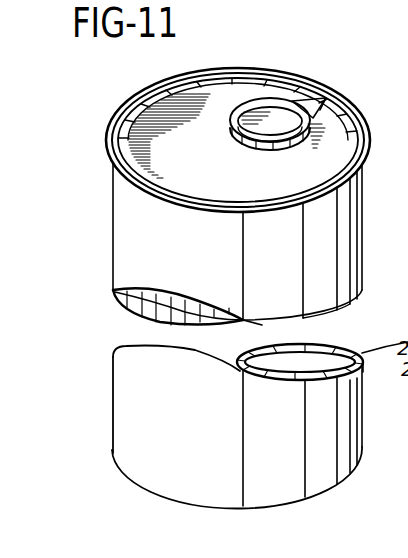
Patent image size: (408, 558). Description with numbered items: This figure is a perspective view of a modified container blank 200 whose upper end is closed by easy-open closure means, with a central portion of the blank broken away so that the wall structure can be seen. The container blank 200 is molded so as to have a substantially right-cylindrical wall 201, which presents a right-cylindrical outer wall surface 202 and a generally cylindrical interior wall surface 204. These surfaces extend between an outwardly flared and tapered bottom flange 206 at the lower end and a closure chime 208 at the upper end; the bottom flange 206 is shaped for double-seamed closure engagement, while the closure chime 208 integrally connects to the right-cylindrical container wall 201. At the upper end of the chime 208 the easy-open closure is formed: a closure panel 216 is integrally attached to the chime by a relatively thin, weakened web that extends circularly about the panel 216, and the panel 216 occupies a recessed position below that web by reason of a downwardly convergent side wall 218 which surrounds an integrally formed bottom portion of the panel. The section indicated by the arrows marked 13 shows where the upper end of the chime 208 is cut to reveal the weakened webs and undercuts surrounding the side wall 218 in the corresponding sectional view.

The section line for FIG. 13 is at (350, 90).
The container blank 200 is at (114, 317).
The right-cylindrical wall 201 is at (172, 119).
The right-cylindrical outer wall surface 202 is at (322, 388).
The generally cylindrical interior wall surface 204 is at (182, 312).
The outwardly flared and tapered bottom flange 206 is at (113, 455).
The closure chime 208 is at (167, 200).
The closure panel 216 is at (203, 183).
The downwardly convergent side wall 218 is at (212, 93).